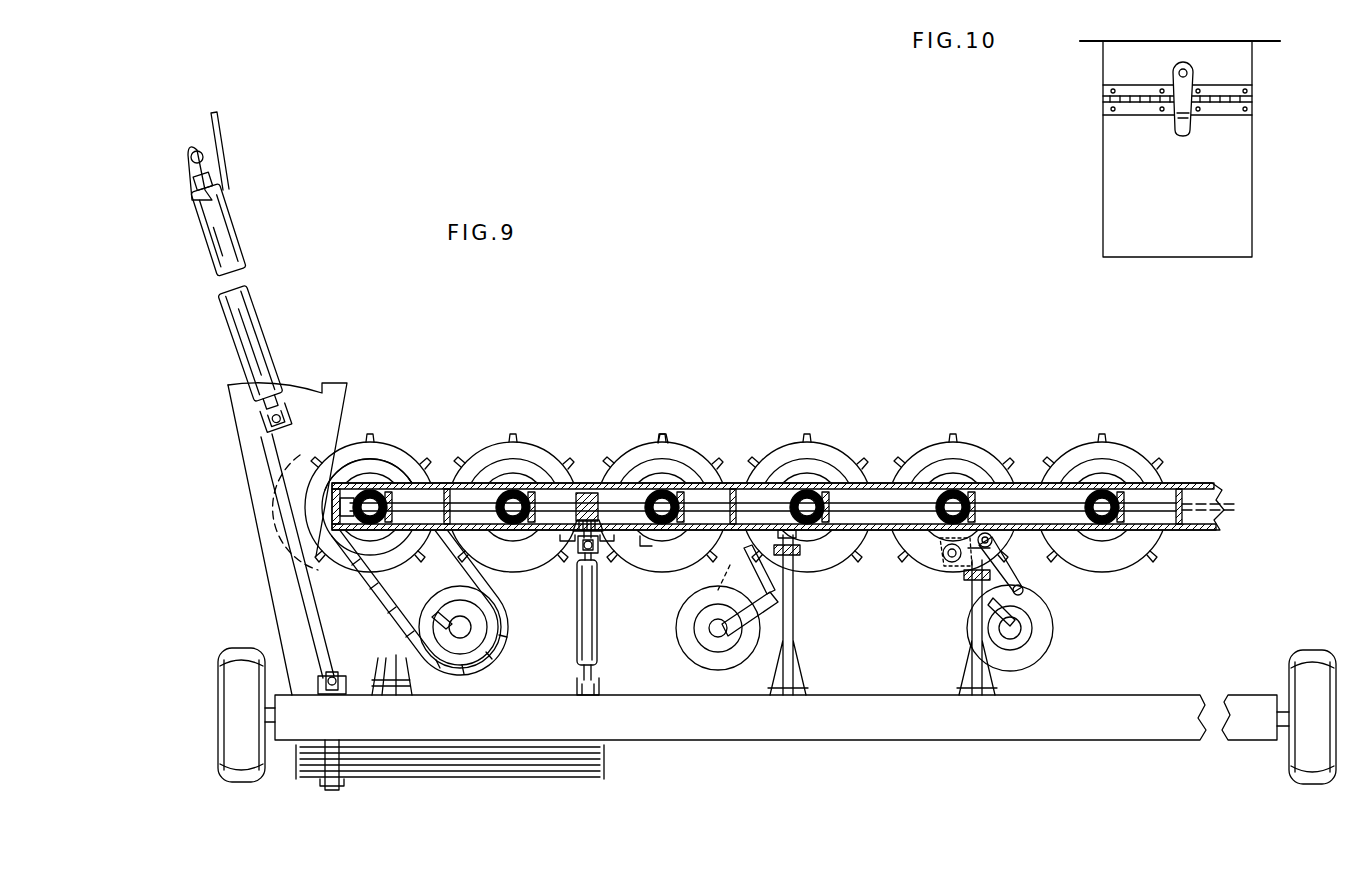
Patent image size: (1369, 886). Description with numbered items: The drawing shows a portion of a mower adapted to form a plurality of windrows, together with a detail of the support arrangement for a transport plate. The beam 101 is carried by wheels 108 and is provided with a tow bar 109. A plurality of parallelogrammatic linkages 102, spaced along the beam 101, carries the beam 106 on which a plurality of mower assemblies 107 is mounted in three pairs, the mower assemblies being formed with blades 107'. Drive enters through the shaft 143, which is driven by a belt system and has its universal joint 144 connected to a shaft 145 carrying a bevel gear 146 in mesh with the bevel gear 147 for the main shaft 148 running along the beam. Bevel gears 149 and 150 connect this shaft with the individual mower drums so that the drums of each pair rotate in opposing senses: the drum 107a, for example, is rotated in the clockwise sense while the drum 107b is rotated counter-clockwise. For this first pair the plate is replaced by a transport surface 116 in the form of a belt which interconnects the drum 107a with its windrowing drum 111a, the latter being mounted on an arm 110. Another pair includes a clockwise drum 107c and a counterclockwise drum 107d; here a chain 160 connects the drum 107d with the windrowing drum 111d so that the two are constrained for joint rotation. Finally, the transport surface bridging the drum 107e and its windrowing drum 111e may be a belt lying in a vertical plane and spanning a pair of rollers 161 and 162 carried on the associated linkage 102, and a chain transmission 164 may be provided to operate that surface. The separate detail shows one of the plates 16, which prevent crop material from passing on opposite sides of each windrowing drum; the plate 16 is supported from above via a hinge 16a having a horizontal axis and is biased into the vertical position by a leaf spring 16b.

In FIG. 9, the beam 101 is at (776, 740).
In FIG. 9, the parallelogrammatic linkages 102 is at (378, 693).
In FIG. 9, the beam 106 is at (1212, 490).
In FIG. 9, the mower assemblies 107 is at (995, 456).
In FIG. 9, the drum 107a is at (363, 443).
In FIG. 9, the drum 107b is at (503, 443).
In FIG. 9, the drum 107c is at (676, 448).
In FIG. 9, the drum 107d is at (815, 443).
In FIG. 9, the drum 107e is at (946, 443).
In FIG. 9, the blades 107' is at (671, 393).
In FIG. 9, the wheels 108 is at (232, 707).
In FIG. 9, the tow bar 109 is at (258, 494).
In FIG. 9, the arm 110 is at (433, 630).
In FIG. 9, the windrowing drum 111a is at (480, 636).
In FIG. 9, the windrowing drum 111d is at (703, 648).
In FIG. 9, the windrowing drum 111e is at (1048, 660).
In FIG. 9, the transport surface 116 is at (377, 585).
In FIG. 9, the shaft 143 is at (598, 651).
In FIG. 9, the universal joint 144 is at (605, 545).
In FIG. 9, the shaft 145 is at (560, 541).
In FIG. 9, the bevel gear 146 is at (591, 486).
In FIG. 9, the bevel gear 147 is at (599, 497).
In FIG. 9, the main shaft 148 is at (874, 500).
In FIG. 9, the bevel gear 149 is at (646, 548).
In FIG. 9, the bevel gear 150 is at (676, 500).
In FIG. 9, the chain 160 is at (758, 600).
In FIG. 9, the roller 161 is at (990, 540).
In FIG. 9, the roller 162 is at (1045, 584).
In FIG. 9, the chain transmission 164 is at (943, 542).
In FIG. 10, the plate 16 is at (1237, 181).
In FIG. 10, the hinge 16a is at (1252, 93).
In FIG. 10, the leaf spring 16b is at (1175, 123).